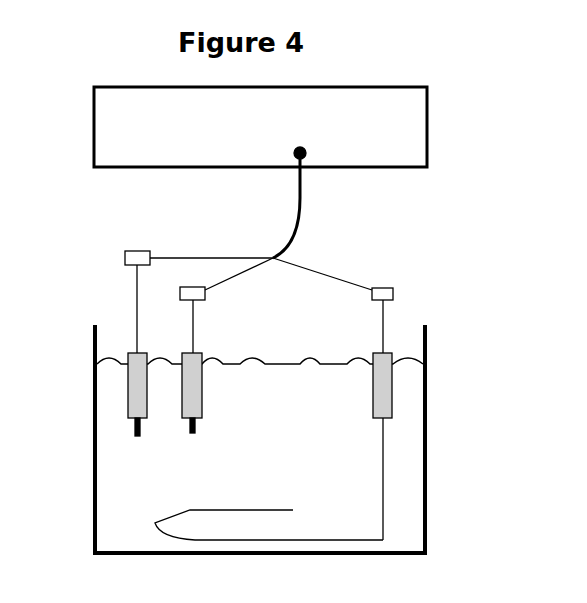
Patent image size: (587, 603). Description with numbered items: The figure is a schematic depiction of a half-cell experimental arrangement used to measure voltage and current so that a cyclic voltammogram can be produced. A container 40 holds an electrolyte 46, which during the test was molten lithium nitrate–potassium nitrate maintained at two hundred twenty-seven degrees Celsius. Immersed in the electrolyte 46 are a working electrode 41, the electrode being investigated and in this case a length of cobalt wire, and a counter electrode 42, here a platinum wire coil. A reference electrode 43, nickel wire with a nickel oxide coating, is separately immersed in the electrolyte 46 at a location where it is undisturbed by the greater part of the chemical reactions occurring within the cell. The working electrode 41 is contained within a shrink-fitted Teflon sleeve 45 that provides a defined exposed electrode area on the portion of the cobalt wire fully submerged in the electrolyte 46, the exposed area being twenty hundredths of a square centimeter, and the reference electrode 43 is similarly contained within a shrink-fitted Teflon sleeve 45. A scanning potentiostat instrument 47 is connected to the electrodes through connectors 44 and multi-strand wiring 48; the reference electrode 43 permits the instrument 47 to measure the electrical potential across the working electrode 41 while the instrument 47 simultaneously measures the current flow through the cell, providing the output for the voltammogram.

The container 40 is at (427, 427).
The working electrode 41 is at (135, 427).
The counter electrode 42 is at (383, 477).
The reference electrode 43 is at (195, 427).
The connectors 44 is at (125, 258).
The shrink-fitted Teflon sleeve 45 is at (128, 387).
The electrolyte 46 is at (240, 493).
The scanning potentiostat instrument 47 is at (260, 127).
The multi-strand wiring 48 is at (302, 212).